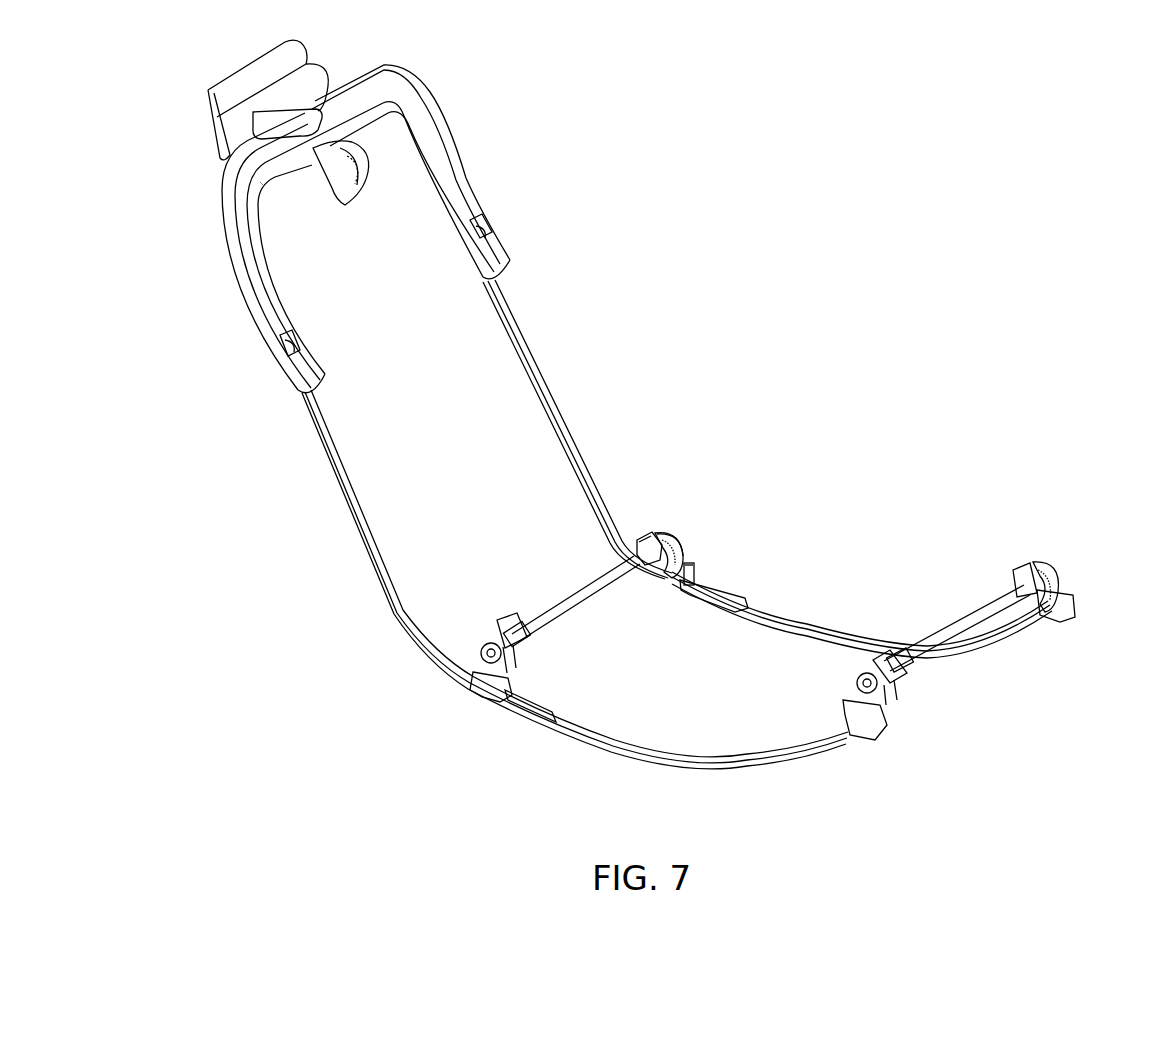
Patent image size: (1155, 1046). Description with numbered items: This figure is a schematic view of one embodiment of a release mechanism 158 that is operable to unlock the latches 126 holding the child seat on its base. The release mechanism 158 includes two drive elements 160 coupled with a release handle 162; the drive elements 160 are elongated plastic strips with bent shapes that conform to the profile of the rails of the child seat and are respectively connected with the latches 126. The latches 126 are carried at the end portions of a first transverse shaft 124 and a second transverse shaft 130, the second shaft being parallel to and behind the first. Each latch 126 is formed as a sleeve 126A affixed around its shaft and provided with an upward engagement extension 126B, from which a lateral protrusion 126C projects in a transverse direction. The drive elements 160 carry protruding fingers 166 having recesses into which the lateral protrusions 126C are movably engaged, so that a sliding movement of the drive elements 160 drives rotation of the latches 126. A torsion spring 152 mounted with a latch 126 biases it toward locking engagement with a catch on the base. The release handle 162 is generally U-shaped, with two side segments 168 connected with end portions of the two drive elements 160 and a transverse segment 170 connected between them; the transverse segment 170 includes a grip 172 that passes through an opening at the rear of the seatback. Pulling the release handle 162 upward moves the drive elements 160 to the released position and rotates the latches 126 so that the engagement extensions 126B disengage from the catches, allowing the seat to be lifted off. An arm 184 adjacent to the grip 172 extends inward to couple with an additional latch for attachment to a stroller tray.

The first transverse shaft 124 is at (923, 660).
The latch 126 is at (783, 456).
The sleeve 126A is at (663, 533).
The engagement extension 126B is at (643, 530).
The lateral protrusion 126C is at (687, 563).
The second transverse shaft 130 is at (580, 603).
The torsion spring 152 is at (480, 653).
The release mechanism 158 is at (848, 285).
The drive element 160 is at (541, 383).
The release handle 162 is at (482, 151).
The protruding finger 166 is at (693, 570).
The side segment 168 is at (487, 218).
The transverse segment 170 is at (266, 180).
The grip 172 is at (208, 130).
The arm 184 is at (350, 197).